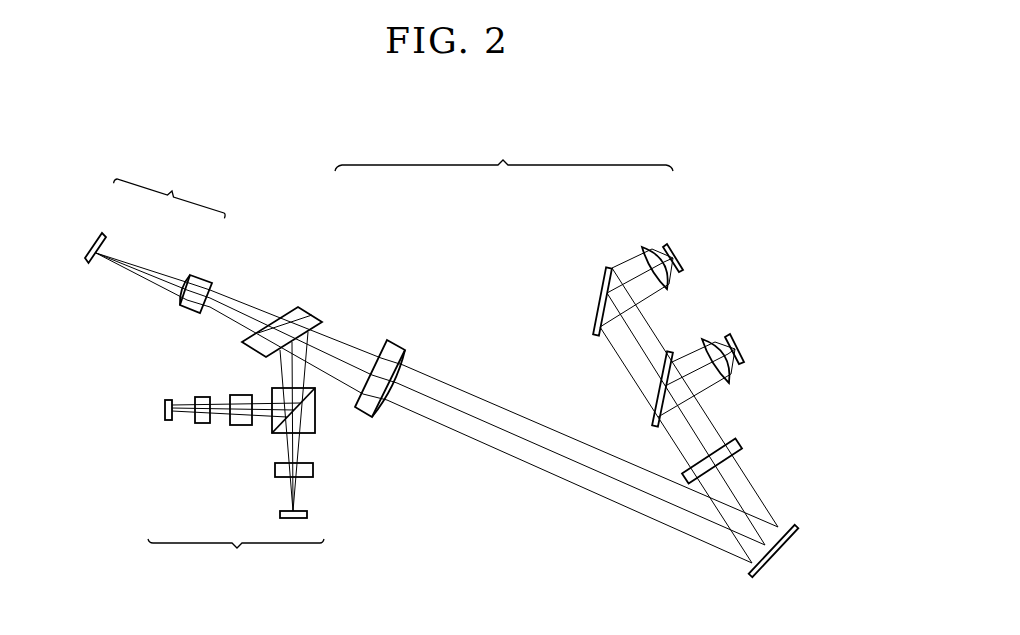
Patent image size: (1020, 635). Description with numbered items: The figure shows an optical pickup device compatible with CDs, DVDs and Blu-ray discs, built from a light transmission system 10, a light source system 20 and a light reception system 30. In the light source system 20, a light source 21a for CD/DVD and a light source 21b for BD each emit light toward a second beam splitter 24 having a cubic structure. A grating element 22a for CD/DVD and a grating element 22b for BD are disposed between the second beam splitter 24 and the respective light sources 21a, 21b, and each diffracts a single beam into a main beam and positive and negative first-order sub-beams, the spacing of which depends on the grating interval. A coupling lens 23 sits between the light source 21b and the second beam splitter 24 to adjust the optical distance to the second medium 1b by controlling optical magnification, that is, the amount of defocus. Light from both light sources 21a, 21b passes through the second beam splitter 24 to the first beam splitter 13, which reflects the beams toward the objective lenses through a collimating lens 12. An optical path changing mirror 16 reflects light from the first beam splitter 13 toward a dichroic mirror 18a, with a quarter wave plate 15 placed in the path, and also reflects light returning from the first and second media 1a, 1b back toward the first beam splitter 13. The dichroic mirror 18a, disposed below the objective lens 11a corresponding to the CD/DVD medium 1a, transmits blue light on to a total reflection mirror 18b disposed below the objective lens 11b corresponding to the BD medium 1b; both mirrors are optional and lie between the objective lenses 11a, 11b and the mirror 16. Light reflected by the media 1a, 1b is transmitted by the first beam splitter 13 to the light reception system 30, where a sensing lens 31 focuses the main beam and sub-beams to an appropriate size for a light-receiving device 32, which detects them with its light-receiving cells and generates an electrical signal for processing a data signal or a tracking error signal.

The light transmission system 10 is at (504, 152).
The first medium 1a is at (752, 334).
The second medium 1b is at (677, 254).
The objective lens 11a is at (730, 380).
The objective lens 11b is at (642, 248).
The collimating lens 12 is at (397, 347).
The first beam splitter 13 is at (304, 312).
The quarter wave plate 15 is at (741, 446).
The optical path changing mirror 16 is at (794, 527).
The dichroic mirror 18a is at (655, 425).
The total reflection mirror 18b is at (600, 297).
The light source system 20 is at (236, 559).
The light source 21a is at (308, 515).
The light source 21b is at (163, 423).
The grating element 22a is at (314, 468).
The grating element 22b is at (205, 426).
The coupling lens 23 is at (245, 428).
The second beam splitter 24 is at (272, 389).
The light reception system 30 is at (170, 191).
The sensing lens 31 is at (205, 273).
The light-receiving device 32 is at (105, 233).